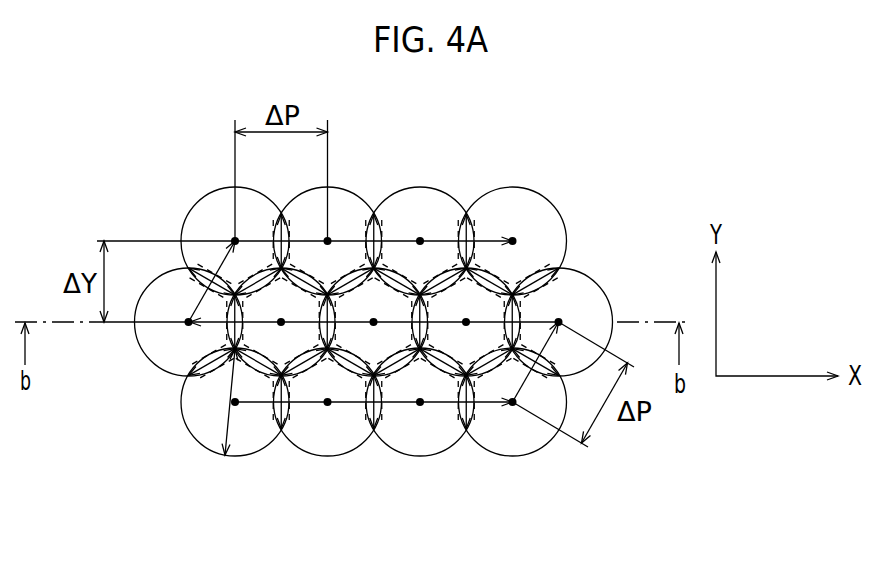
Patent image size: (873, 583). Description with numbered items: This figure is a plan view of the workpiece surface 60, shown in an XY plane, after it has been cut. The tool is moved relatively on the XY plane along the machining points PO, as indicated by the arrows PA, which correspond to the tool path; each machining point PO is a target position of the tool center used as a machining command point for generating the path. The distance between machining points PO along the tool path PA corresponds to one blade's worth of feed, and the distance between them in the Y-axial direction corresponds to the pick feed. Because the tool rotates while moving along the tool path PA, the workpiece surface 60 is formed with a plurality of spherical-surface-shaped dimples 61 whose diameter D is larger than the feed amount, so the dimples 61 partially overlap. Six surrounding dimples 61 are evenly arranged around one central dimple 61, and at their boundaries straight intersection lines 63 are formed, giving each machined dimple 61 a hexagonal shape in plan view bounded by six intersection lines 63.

The workpiece surface 60 is at (568, 178).
The dimple 61 is at (415, 200).
The intersection line 63 is at (410, 303).
The machining point PO is at (327, 240).
The tool path PA is at (345, 404).
The dimple diameter D is at (222, 424).